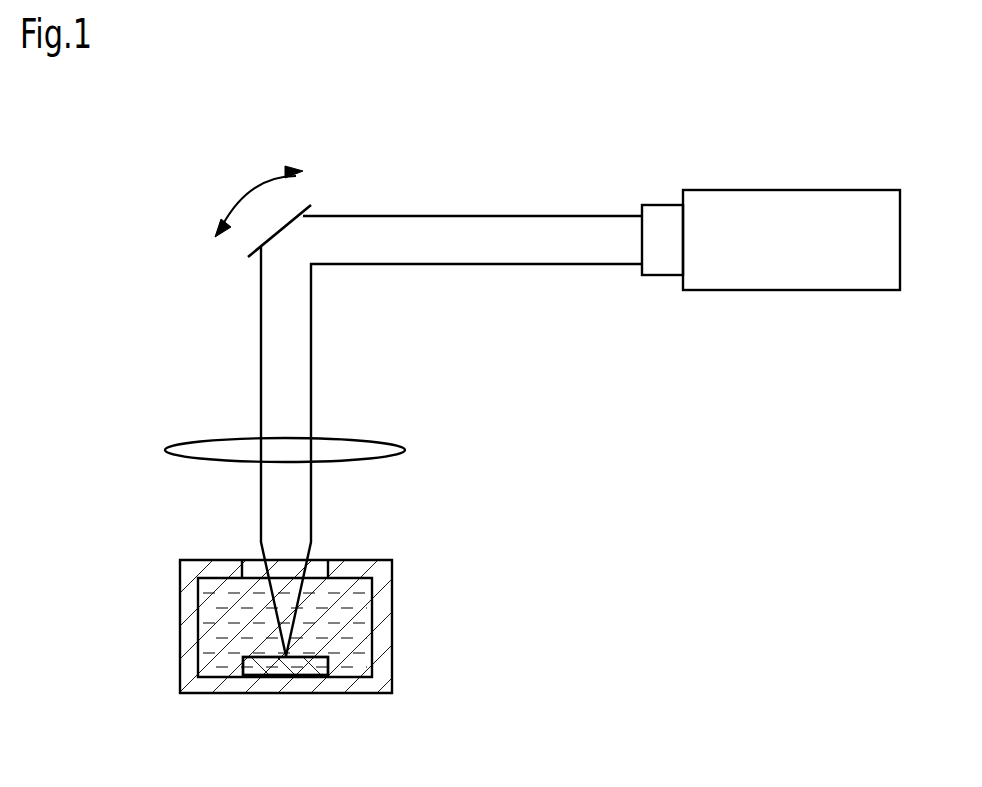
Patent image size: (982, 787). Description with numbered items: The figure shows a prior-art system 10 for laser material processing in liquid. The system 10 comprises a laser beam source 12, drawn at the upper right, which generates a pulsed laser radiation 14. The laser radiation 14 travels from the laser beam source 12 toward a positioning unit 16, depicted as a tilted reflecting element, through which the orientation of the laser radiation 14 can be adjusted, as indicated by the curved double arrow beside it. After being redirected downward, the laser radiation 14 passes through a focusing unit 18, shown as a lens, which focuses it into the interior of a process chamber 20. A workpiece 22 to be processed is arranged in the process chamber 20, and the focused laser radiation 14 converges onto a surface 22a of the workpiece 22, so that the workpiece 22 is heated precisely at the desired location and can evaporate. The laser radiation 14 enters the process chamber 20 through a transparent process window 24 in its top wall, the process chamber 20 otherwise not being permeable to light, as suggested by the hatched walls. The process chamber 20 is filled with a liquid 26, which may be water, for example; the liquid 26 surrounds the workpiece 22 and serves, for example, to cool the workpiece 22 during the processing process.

The system 10 is at (197, 155).
The laser beam source 12 is at (775, 190).
The laser radiation 14 is at (422, 215).
The positioning unit 16 is at (310, 203).
The focusing unit 18 is at (355, 440).
The process chamber 20 is at (408, 612).
The workpiece 22 is at (238, 665).
The surface of the workpiece 22a is at (315, 656).
The transparent process window 24 is at (250, 560).
The liquid 26 is at (354, 632).